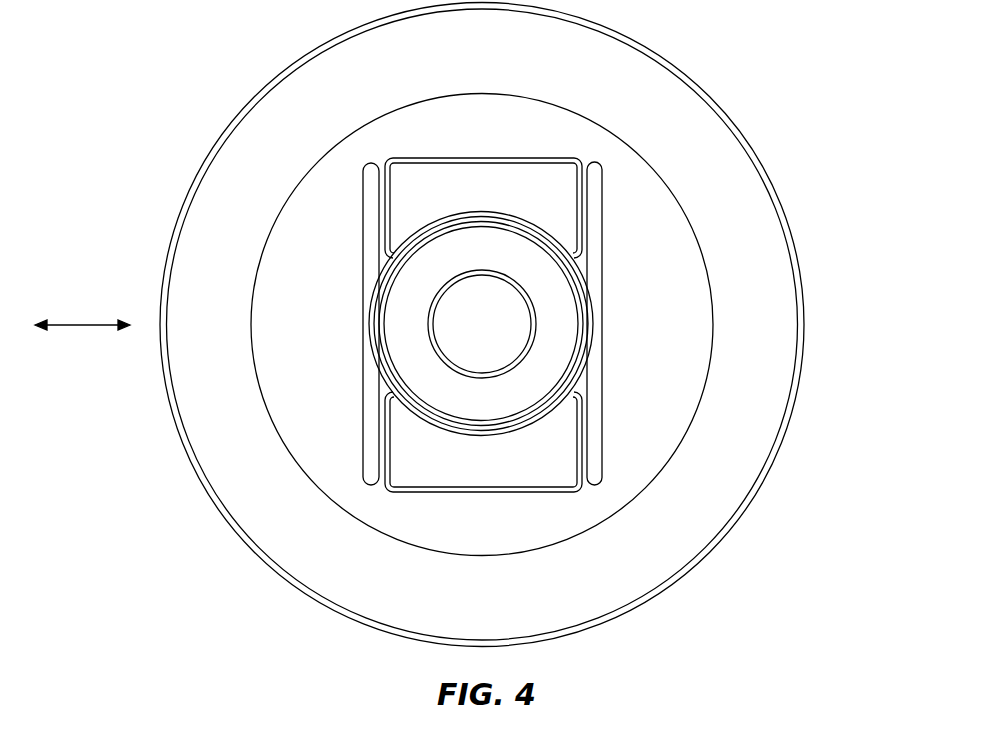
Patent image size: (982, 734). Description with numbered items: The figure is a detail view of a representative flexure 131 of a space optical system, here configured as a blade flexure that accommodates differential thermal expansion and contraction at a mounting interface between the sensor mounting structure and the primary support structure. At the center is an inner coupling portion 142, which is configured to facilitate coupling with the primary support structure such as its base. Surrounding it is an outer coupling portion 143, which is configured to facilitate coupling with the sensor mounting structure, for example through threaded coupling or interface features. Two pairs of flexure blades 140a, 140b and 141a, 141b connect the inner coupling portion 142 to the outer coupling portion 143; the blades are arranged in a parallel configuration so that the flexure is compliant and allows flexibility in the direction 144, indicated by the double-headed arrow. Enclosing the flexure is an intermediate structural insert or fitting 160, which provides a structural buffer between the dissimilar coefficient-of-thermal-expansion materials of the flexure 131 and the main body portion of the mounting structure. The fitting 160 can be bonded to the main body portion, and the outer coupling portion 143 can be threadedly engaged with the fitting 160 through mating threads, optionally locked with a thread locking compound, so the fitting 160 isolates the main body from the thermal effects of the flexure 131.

The fitting 160 is at (595, 57).
The outer coupling portion 143 is at (680, 278).
The flexure 131 is at (341, 281).
The inner coupling portion 142 is at (555, 345).
The flexure blade 140a is at (382, 218).
The flexure blade 140b is at (584, 213).
The flexure blade 141a is at (380, 450).
The flexure blade 141b is at (587, 450).
The direction 144 is at (90, 326).